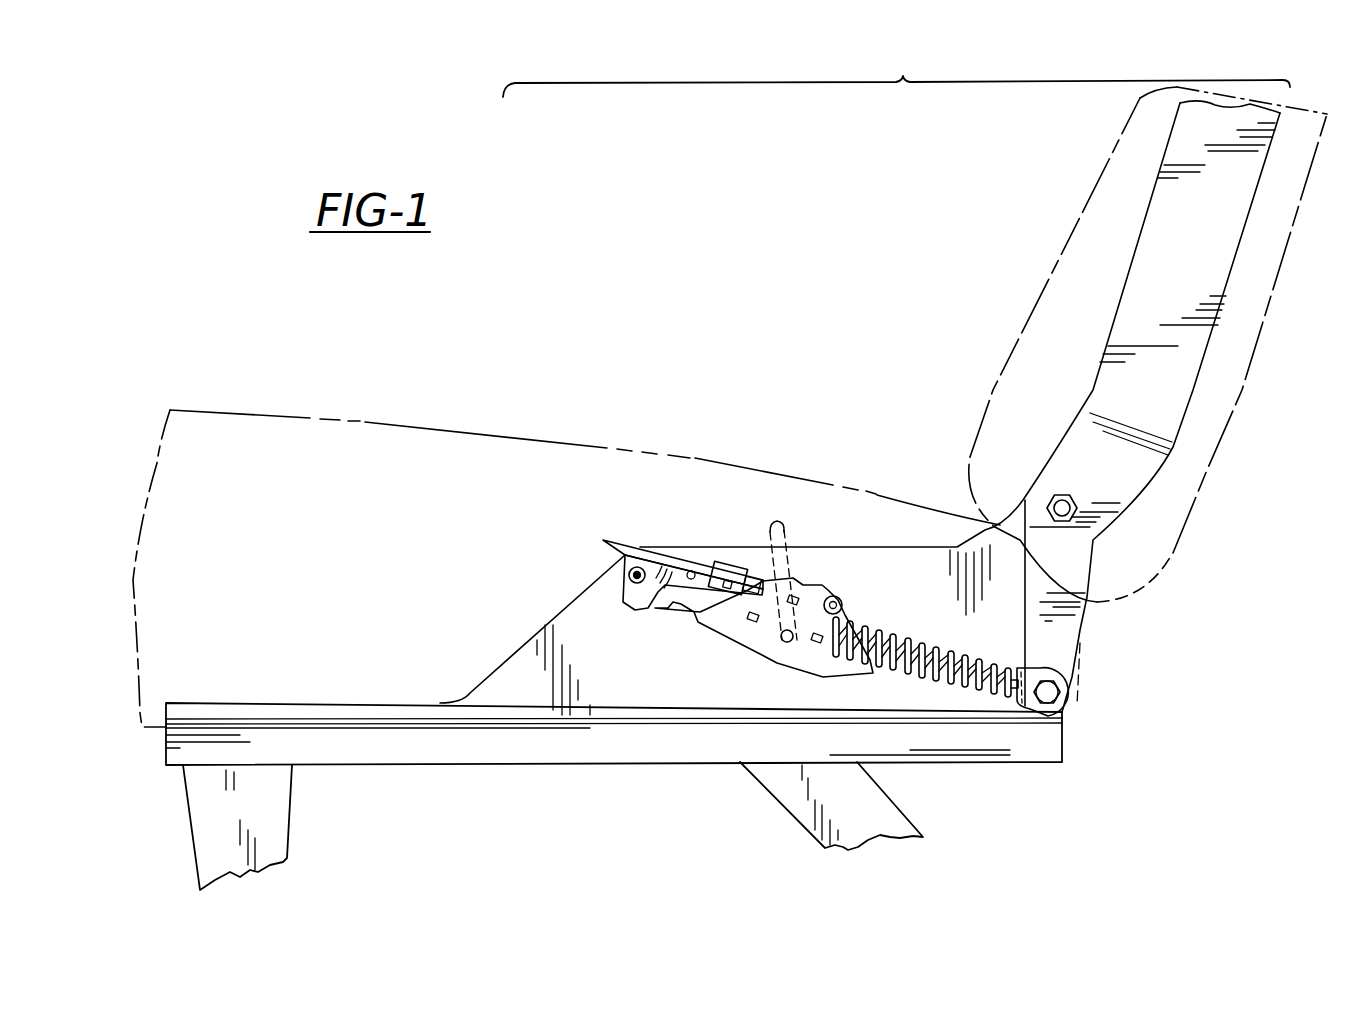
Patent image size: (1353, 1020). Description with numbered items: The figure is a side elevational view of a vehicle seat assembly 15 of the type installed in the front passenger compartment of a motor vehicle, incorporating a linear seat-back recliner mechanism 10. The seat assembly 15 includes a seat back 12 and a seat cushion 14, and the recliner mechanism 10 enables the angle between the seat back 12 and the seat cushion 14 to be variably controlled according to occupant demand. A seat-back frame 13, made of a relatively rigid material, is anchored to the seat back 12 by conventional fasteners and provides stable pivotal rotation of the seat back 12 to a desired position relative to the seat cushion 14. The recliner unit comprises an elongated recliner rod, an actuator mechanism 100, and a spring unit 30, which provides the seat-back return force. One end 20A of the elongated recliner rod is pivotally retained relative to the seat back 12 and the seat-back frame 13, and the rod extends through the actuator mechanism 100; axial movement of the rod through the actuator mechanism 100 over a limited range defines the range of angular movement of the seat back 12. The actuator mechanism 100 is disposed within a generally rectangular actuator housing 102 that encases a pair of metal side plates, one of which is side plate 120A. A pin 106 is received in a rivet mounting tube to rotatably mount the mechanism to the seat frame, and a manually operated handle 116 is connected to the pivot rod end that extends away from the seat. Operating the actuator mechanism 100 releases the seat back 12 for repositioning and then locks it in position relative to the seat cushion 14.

The linear seat-back recliner mechanism 10 is at (735, 683).
The seat back 12 is at (1055, 248).
The seat-back frame 13 is at (1237, 205).
The seat cushion 14 is at (587, 460).
The vehicle seat assembly 15 is at (896, 72).
The end of elongated recliner rod 20A is at (1062, 715).
The spring unit 30 is at (937, 640).
The actuator mechanism 100 is at (618, 597).
The actuator housing 102 is at (840, 610).
The pin 106 is at (790, 645).
The manually operated handle 116 is at (773, 527).
The metal side plate 120A is at (672, 598).